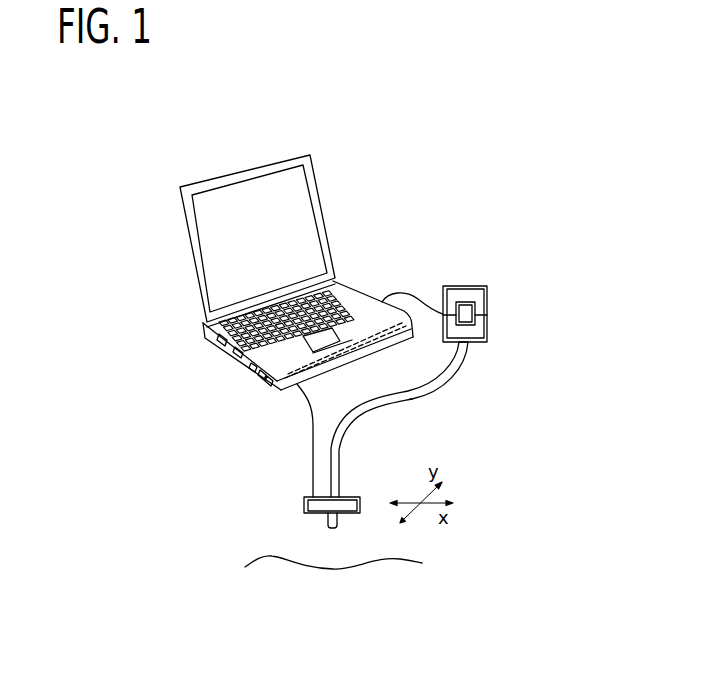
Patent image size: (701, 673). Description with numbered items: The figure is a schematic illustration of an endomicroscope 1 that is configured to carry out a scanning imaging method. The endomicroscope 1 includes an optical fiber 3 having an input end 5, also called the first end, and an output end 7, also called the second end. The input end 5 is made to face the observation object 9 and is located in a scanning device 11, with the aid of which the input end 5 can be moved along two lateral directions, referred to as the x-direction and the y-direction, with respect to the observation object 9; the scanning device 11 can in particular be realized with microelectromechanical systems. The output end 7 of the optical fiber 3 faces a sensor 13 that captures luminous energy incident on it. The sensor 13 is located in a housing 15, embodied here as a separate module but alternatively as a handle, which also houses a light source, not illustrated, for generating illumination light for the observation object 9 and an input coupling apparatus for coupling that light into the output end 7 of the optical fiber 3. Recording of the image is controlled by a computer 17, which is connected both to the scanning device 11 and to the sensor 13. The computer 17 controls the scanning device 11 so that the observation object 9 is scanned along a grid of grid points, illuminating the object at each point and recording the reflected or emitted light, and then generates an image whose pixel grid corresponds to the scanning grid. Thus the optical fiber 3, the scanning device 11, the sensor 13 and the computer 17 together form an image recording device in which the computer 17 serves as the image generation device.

The endomicroscope 1 is at (515, 433).
The optical fiber 3 is at (437, 391).
The input end 5 is at (329, 527).
The output end 7 is at (473, 326).
The observation object 9 is at (264, 558).
The scanning device 11 is at (304, 503).
The sensor 13 is at (487, 315).
The housing 15 is at (462, 286).
The computer 17 is at (240, 138).